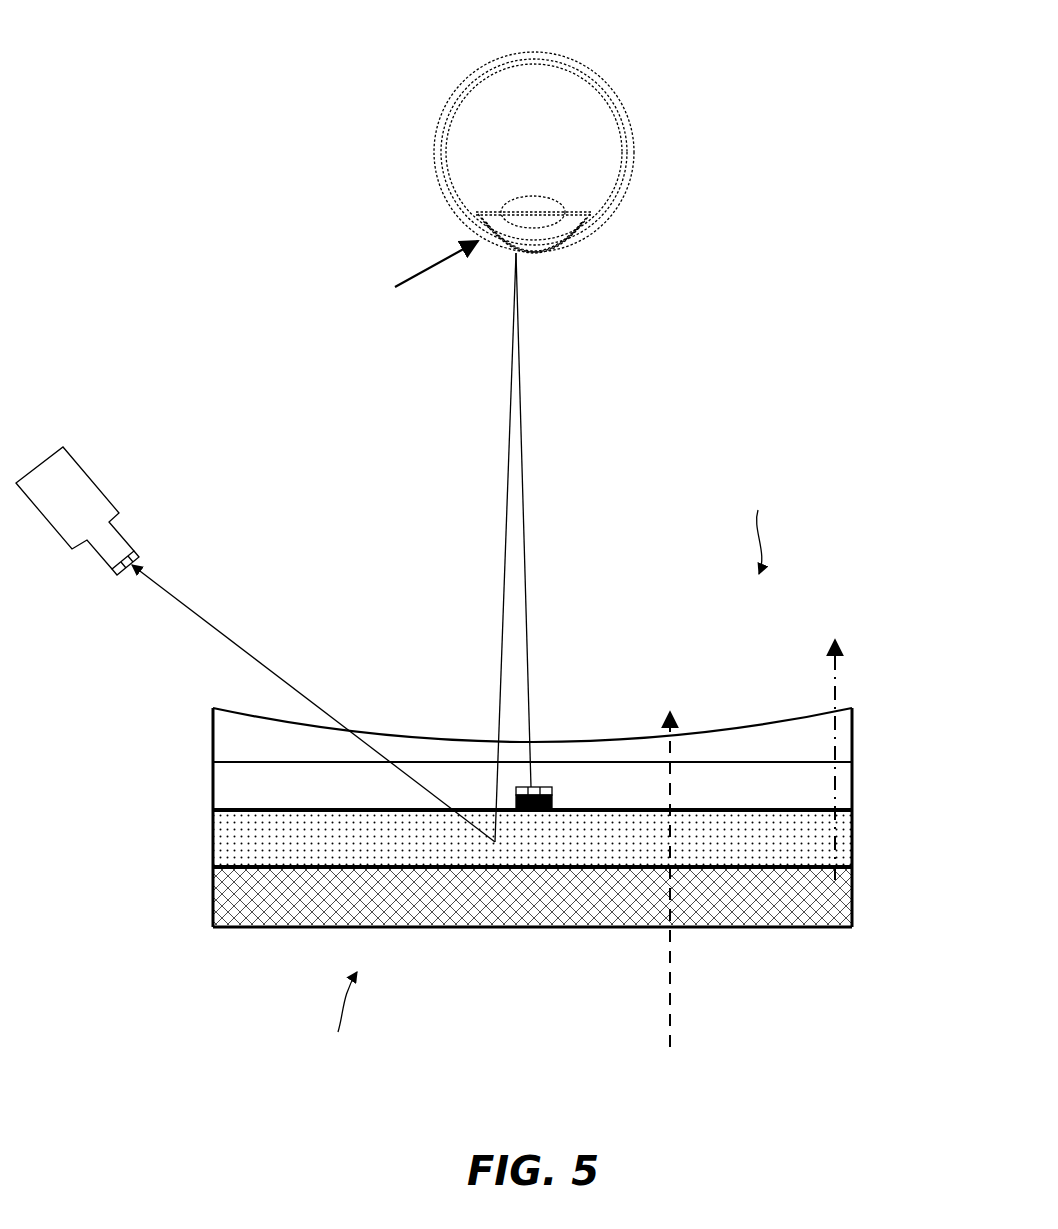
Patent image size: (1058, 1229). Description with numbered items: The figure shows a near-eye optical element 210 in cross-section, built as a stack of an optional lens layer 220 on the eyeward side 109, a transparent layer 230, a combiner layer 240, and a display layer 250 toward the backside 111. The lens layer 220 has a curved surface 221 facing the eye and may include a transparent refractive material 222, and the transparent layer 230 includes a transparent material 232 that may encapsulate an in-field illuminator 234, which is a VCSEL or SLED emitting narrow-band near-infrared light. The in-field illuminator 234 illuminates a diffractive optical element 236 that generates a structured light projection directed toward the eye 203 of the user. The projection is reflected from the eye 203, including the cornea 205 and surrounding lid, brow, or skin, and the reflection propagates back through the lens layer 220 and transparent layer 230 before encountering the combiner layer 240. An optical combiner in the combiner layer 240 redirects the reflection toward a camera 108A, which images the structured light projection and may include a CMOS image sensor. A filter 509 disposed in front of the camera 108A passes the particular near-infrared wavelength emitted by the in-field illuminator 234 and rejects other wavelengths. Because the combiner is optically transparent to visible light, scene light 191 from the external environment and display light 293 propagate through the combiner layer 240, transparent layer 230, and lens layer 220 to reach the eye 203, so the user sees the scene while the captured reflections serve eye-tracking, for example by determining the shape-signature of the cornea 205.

The eye 203 is at (622, 118).
The cornea 205 is at (419, 275).
The camera 108A is at (80, 465).
The filter 509 is at (137, 552).
The eyeward side 109 is at (764, 502).
The display light 293 is at (835, 725).
The scene light 191 is at (670, 909).
The backside 111 is at (346, 1044).
The near-eye optical element 210 is at (539, 795).
The lens layer 220 is at (575, 713).
The curved eyeward surface 221 is at (815, 716).
The transparent refractive material 222 is at (807, 744).
The transparent layer 230 is at (575, 786).
The transparent material 232 is at (767, 784).
The in-field illuminator 234 is at (553, 802).
The diffractive optical element 236 is at (549, 786).
The combiner layer 240 is at (860, 811).
The display layer 250 is at (860, 868).